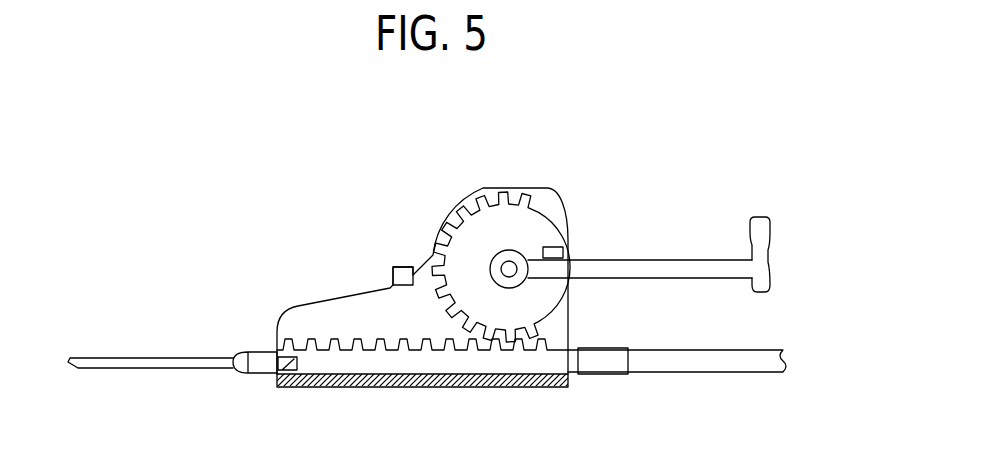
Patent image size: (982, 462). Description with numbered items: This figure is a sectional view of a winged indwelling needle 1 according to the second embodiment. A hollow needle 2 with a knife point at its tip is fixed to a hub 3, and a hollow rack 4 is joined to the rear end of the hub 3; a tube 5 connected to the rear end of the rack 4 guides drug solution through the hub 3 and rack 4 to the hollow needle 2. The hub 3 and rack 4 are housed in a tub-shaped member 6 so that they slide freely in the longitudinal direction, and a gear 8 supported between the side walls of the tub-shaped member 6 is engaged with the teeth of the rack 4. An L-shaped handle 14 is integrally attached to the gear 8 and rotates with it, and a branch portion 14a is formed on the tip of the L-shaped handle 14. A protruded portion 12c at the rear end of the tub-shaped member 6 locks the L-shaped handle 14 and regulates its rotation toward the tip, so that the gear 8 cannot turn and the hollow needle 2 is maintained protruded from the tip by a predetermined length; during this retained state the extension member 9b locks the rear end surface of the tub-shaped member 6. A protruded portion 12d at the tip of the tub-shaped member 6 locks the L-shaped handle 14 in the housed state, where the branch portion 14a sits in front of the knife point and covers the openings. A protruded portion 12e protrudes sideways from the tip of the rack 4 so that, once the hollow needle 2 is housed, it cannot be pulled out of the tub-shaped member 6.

The winged indwelling needle 1 is at (318, 185).
The hollow needle 2 is at (123, 358).
The hub 3 is at (260, 351).
The hollow rack 4 is at (433, 360).
The tube 5 is at (740, 372).
The tub-shaped member 6 is at (357, 317).
The gear 8 is at (510, 220).
The extension member 9b is at (575, 360).
The protruded portion 12c is at (715, 207).
The protruded portion 12d is at (403, 275).
The protruded portion 12e is at (280, 387).
The L-shaped handle 14 is at (650, 258).
The branch portion 14a is at (767, 245).